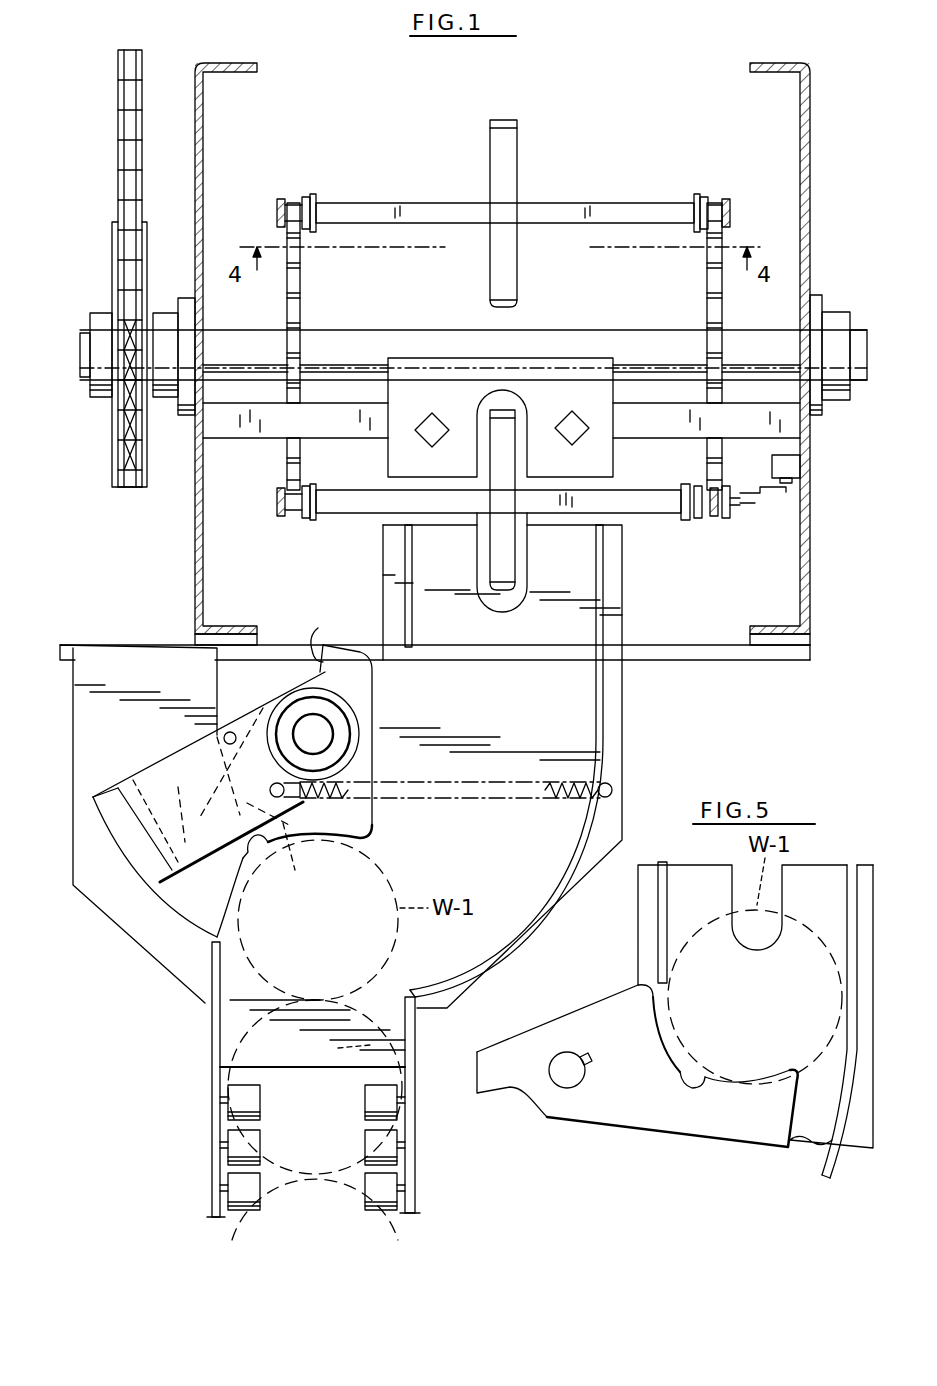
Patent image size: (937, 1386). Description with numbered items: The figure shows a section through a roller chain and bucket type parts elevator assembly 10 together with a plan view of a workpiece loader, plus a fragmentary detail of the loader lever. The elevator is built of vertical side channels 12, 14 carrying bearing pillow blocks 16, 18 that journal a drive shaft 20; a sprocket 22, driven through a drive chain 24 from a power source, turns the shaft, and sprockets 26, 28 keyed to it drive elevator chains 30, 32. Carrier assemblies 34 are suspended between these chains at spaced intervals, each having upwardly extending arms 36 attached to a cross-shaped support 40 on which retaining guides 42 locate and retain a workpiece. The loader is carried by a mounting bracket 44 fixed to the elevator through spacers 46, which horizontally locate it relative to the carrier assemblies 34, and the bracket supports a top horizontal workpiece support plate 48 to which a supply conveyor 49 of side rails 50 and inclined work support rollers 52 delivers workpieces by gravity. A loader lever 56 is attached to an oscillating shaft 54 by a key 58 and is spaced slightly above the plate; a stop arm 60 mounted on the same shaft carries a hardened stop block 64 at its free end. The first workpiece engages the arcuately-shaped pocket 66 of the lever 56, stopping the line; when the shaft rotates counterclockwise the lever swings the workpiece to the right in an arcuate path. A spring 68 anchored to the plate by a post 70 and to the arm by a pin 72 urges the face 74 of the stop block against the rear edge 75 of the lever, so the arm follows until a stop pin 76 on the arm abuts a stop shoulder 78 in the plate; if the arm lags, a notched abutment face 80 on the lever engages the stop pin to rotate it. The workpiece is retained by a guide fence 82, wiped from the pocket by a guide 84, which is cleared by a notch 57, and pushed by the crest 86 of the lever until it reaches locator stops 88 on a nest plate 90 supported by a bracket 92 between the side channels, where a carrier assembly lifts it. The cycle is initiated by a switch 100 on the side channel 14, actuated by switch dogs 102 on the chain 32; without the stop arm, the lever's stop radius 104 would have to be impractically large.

In FIG. 1, the assembly 10 is at (531, 348).
In FIG. 1, the vertical side channel 12 is at (204, 190).
In FIG. 1, the vertical side channel 14 is at (800, 146).
In FIG. 1, the bearing pillow block 16 is at (188, 416).
In FIG. 1, the bearing pillow block 18 is at (818, 300).
In FIG. 1, the drive shaft 20 is at (378, 340).
In FIG. 1, the sprocket 22 is at (112, 452).
In FIG. 1, the drive chain 24 is at (118, 197).
In FIG. 1, the sprocket 26 is at (301, 290).
In FIG. 1, the sprocket 28 is at (706, 288).
In FIG. 1, the elevator chain 30 is at (282, 516).
In FIG. 1, the elevator chain 32 is at (702, 518).
In FIG. 1, the carrier assembly 34 is at (428, 202).
In FIG. 1, the upwardly extending arm 36 is at (316, 520).
In FIG. 1, the cross-shaped support 40 is at (660, 498).
In FIG. 1, the retaining guide 42 is at (492, 300).
In FIG. 1, the mounting bracket 44 is at (675, 658).
In FIG. 1, the spacer 46 is at (195, 639).
In FIG. 1, the top horizontal workpiece support plate 48 is at (624, 730).
In FIG. 5, the top horizontal workpiece support plate 48 is at (755, 1006).
In FIG. 1, the supply conveyor 49 is at (308, 1091).
In FIG. 1, the side rail 50 is at (212, 1043).
In FIG. 1, the work support roller 52 is at (260, 1108).
In FIG. 1, the oscillating shaft 54 is at (313, 734).
In FIG. 5, the oscillating shaft 54 is at (563, 1083).
In FIG. 1, the loader lever 56 is at (347, 764).
In FIG. 5, the loader lever 56 is at (644, 1060).
In FIG. 1, the notch 57 is at (258, 858).
In FIG. 5, the notch 57 is at (705, 1070).
In FIG. 5, the key 58 is at (592, 1063).
In FIG. 1, the stop arm 60 is at (175, 765).
In FIG. 1, the hardened stop block 64 is at (100, 820).
In FIG. 1, the arcuately-shaped pocket 66 is at (345, 840).
In FIG. 5, the arcuately-shaped pocket 66 is at (670, 1040).
In FIG. 1, the spring 68 is at (556, 797).
In FIG. 1, the post 70 is at (612, 790).
In FIG. 1, the pin 72 is at (270, 790).
In FIG. 1, the face 74 is at (160, 900).
In FIG. 1, the rear edge 75 is at (179, 797).
In FIG. 1, the stop pin 76 is at (233, 732).
In FIG. 1, the stop shoulder 78 is at (291, 861).
In FIG. 1, the notched abutment face 80 is at (325, 631).
In FIG. 1, the guide fence 82 is at (624, 838).
In FIG. 5, the guide fence 82 is at (852, 866).
In FIG. 1, the guide 84 is at (413, 636).
In FIG. 5, the guide 84 is at (658, 920).
In FIG. 5, the crest 86 is at (810, 1072).
In FIG. 1, the locator stop 88 is at (430, 418).
In FIG. 1, the nest plate 90 is at (500, 372).
In FIG. 1, the bracket 92 is at (270, 440).
In FIG. 1, the switch 100 is at (800, 466).
In FIG. 1, the switch dog 102 is at (732, 505).
In FIG. 1, the stop radius 104 is at (185, 918).